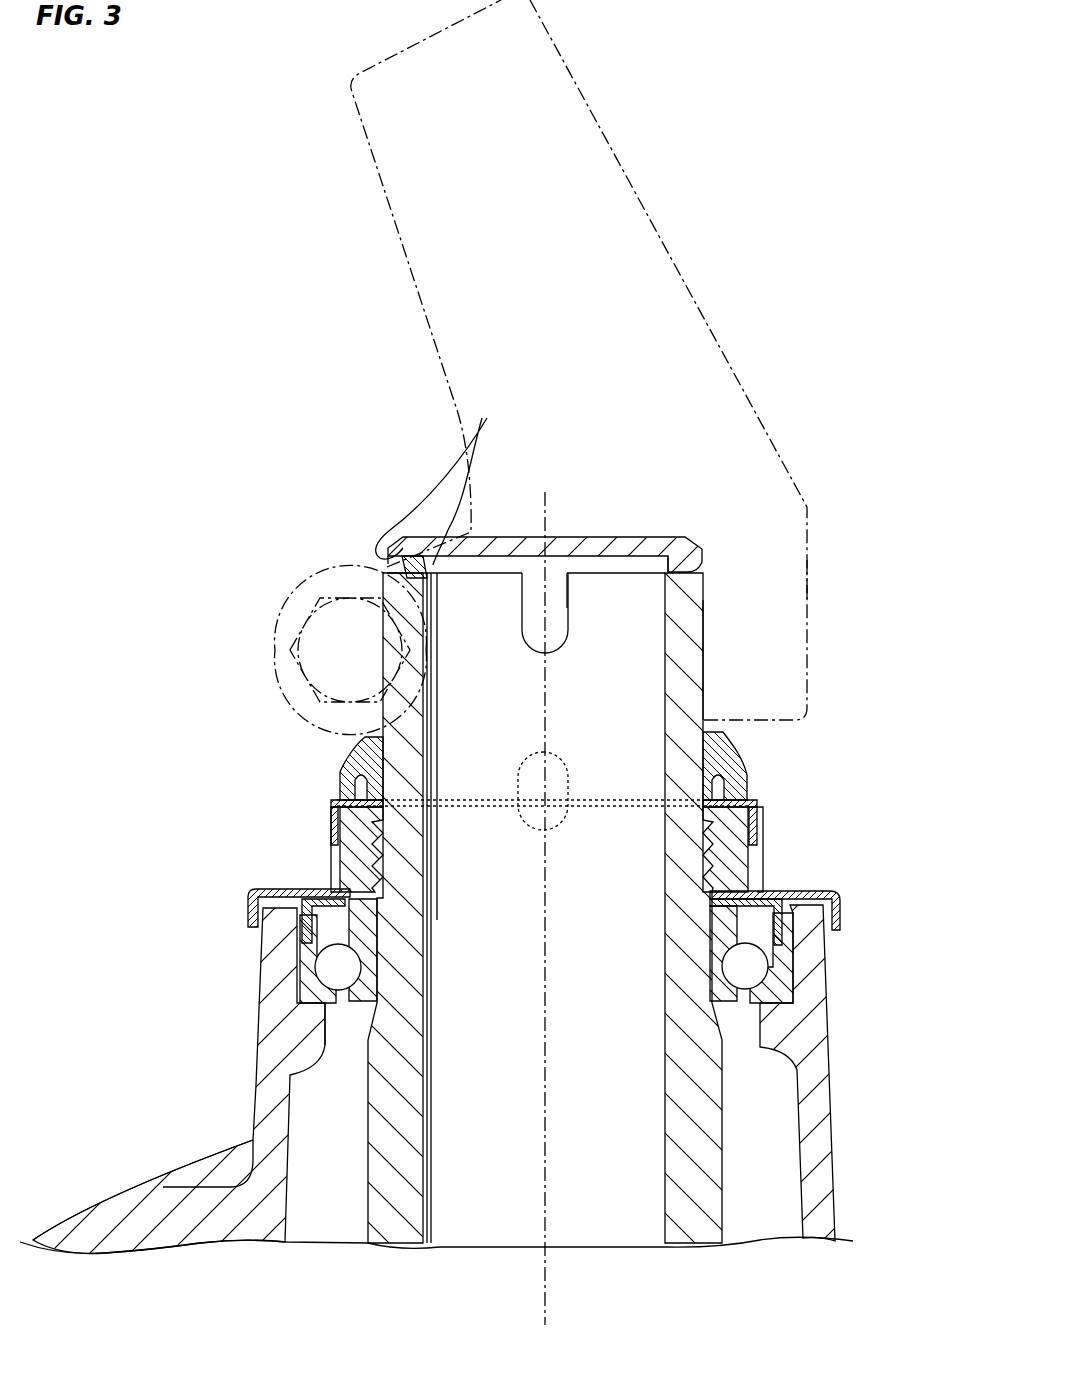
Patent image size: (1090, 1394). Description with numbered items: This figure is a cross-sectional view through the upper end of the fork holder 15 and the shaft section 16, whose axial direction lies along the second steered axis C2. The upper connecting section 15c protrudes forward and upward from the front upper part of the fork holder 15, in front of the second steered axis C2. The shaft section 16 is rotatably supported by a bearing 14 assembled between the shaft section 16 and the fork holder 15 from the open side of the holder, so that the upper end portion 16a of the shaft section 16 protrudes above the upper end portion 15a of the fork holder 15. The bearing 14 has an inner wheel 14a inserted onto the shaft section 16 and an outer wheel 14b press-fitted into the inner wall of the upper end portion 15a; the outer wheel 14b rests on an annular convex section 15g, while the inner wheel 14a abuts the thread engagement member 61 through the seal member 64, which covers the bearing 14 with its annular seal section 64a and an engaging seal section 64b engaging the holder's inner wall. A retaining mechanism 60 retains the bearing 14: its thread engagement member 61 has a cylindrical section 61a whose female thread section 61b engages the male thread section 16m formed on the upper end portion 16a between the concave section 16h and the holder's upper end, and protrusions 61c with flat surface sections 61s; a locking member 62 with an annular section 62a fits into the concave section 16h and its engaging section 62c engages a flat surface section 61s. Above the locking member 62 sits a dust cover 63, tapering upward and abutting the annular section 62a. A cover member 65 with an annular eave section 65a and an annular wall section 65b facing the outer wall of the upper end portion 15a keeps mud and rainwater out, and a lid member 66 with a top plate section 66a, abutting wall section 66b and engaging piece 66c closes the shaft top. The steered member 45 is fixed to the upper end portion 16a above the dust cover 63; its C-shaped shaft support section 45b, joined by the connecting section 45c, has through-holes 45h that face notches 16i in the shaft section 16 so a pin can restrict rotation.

The bearing 14 is at (437, 908).
The inner wheel 14a is at (373, 947).
The outer wheel 14b is at (337, 1007).
The fork holder 15 is at (253, 1091).
The upper end portion 15a is at (266, 960).
The upper connecting section 15c is at (75, 1200).
The annular convex section 15g is at (318, 1047).
The shaft section 16 is at (722, 1125).
The upper end portion 16a is at (703, 673).
The concave section 16h is at (555, 770).
The notches 16i is at (532, 652).
The male thread section 16m is at (707, 866).
The steered member 45 is at (413, 311).
The shaft support section 45b is at (808, 577).
The connecting section 45c is at (668, 240).
The through-holes 45h is at (568, 628).
The retaining mechanism 60 is at (526, 821).
The thread engagement member 61 is at (322, 860).
The cylindrical section 61a is at (345, 762).
The female thread section 61b is at (705, 870).
The protrusions 61c is at (765, 873).
The flat surface sections 61s is at (758, 852).
The locking member 62 is at (541, 793).
The annular section 62a is at (745, 800).
The engaging section 62c is at (757, 833).
The dust cover 63 is at (735, 775).
The seal member 64 is at (546, 989).
The annular seal section 64a is at (747, 907).
The engaging seal section 64b is at (762, 927).
The cover member 65 is at (444, 894).
The annular eave section 65a is at (320, 858).
The annular wall section 65b is at (250, 905).
The lid member 66 is at (539, 462).
The top plate section 66a is at (597, 537).
The abutting wall section 66b is at (466, 472).
The engaging piece 66c is at (503, 556).
The second steered axis C2 is at (543, 1303).